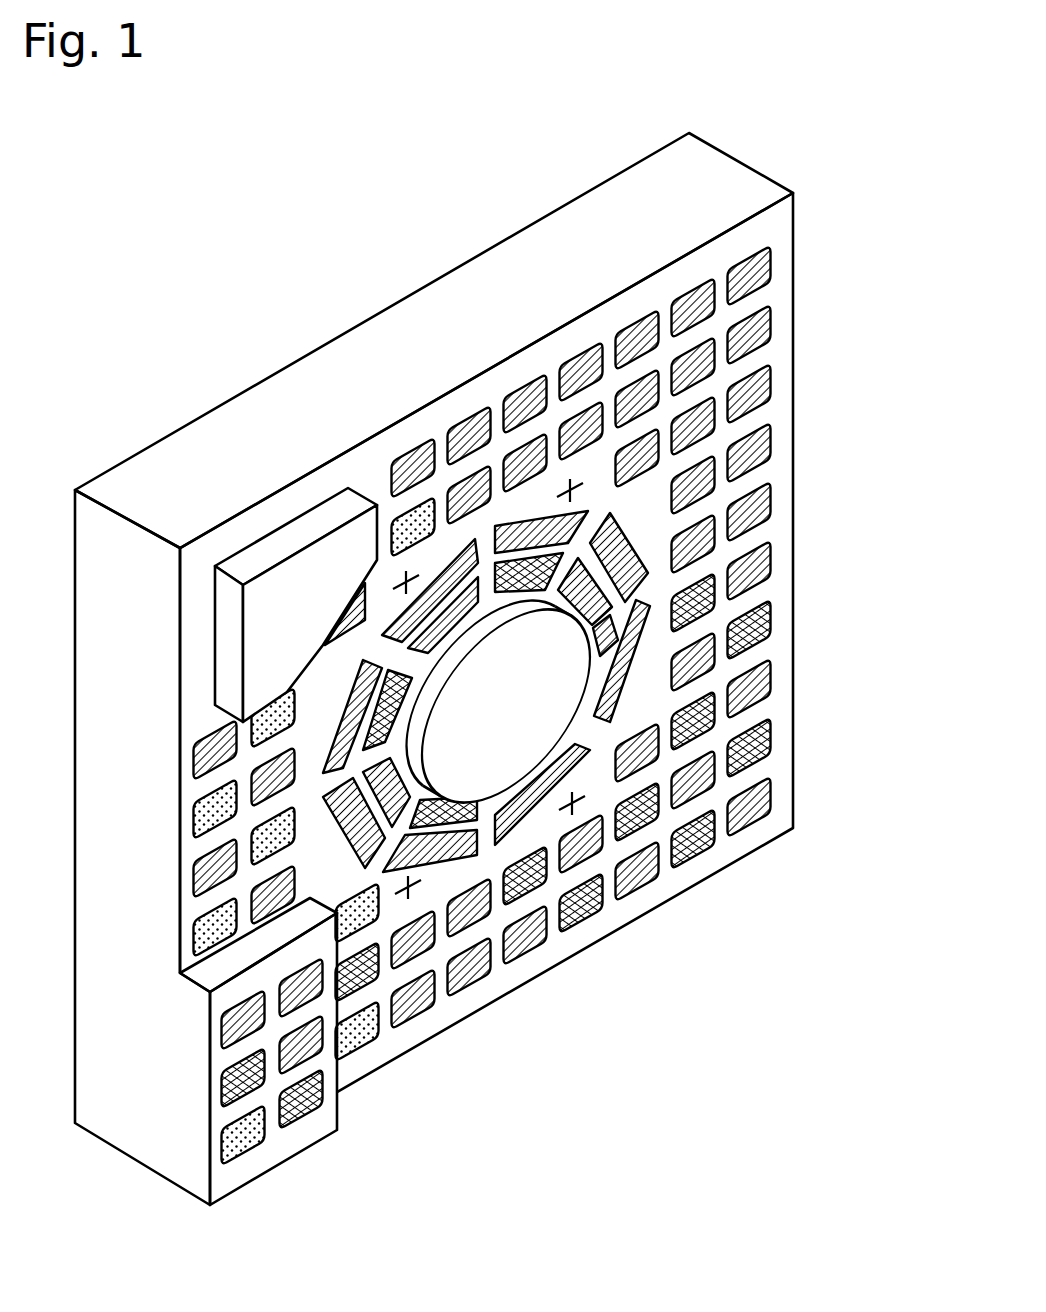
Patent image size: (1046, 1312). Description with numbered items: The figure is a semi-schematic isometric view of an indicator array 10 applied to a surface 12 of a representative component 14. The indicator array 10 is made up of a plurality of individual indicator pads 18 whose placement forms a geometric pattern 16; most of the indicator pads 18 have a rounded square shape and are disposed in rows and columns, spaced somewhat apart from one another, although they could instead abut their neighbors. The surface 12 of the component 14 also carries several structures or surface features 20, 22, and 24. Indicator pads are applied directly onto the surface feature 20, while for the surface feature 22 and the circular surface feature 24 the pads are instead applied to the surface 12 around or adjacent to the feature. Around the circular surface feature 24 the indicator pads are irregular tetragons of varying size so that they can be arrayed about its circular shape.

The indicator array 10 is at (818, 800).
The surface 12 is at (772, 216).
The component 14 is at (366, 256).
The geometric pattern 16 is at (530, 1024).
The indicator pads 18 is at (417, 968).
The surface feature 20 is at (548, 512).
The surface feature 22 is at (311, 629).
The circular surface feature 24 is at (531, 724).